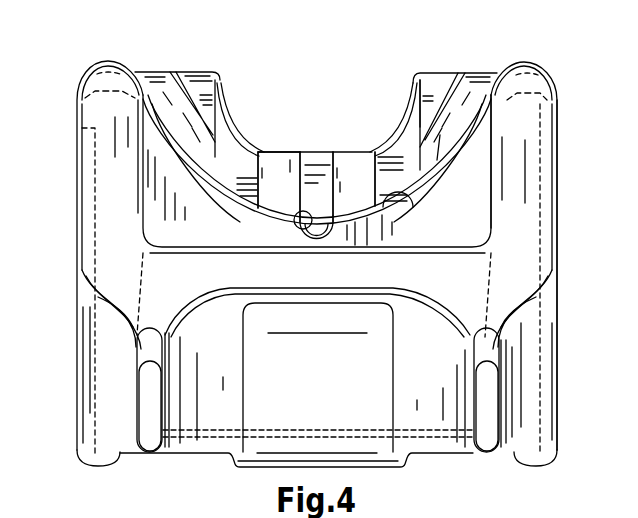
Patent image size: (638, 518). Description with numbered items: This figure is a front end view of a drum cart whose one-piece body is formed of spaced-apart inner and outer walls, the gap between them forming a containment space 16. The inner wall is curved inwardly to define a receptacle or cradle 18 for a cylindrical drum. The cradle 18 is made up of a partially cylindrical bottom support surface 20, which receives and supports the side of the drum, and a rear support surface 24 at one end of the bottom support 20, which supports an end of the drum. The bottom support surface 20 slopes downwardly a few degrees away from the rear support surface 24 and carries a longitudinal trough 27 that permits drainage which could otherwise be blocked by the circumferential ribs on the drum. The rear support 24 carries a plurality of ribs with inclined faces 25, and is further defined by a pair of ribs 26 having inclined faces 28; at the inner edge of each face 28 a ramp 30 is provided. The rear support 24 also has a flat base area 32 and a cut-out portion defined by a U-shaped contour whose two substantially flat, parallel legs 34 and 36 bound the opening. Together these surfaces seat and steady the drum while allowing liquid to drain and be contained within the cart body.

The containment space 16 is at (522, 175).
The receptacle or cradle 18 is at (438, 142).
The bottom support surface 20 is at (389, 187).
The rear support surface 24 is at (270, 152).
The inclined faces 25 is at (287, 157).
The ribs 26 is at (145, 92).
The longitudinal trough 27 is at (295, 211).
The inclined faces 28 is at (156, 77).
The ramp 30 is at (196, 80).
The flat base area 32 is at (325, 173).
The leg 34 is at (231, 107).
The leg 36 is at (406, 101).